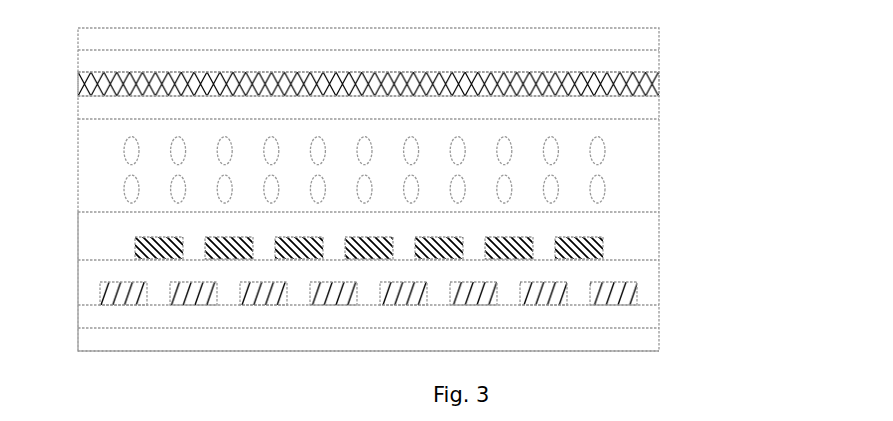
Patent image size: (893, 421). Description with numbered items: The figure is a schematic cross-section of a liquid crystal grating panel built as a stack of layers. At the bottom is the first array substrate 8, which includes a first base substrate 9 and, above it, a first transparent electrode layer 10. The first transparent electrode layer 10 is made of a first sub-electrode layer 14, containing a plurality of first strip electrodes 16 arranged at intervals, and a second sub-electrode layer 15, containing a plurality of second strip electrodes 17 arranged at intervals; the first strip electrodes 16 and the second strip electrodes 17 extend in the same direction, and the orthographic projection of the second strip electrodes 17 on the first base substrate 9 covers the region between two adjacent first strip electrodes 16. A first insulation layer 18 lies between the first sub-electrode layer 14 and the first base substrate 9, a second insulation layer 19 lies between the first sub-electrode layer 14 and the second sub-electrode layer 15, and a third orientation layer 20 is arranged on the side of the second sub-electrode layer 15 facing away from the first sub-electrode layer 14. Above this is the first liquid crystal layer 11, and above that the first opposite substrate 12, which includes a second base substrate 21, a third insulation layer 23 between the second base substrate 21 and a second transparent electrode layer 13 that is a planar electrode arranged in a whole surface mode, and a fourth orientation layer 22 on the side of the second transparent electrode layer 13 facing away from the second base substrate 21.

The first array substrate 8 is at (806, 342).
The first base substrate 9 is at (645, 342).
The first transparent electrode layer 10 is at (767, 247).
The first liquid crystal layer 11 is at (660, 165).
The first opposite substrate 12 is at (730, 30).
The second transparent electrode layer 13 is at (650, 86).
The first sub-electrode layer 14 is at (433, 293).
The second sub-electrode layer 15 is at (450, 247).
The first strip electrodes 16 is at (637, 293).
The second strip electrodes 17 is at (603, 247).
The first insulation layer 18 is at (637, 319).
The second insulation layer 19 is at (92, 272).
The third orientation layer 20 is at (645, 226).
The second base substrate 21 is at (645, 36).
The fourth orientation layer 22 is at (641, 110).
The third insulation layer 23 is at (638, 64).